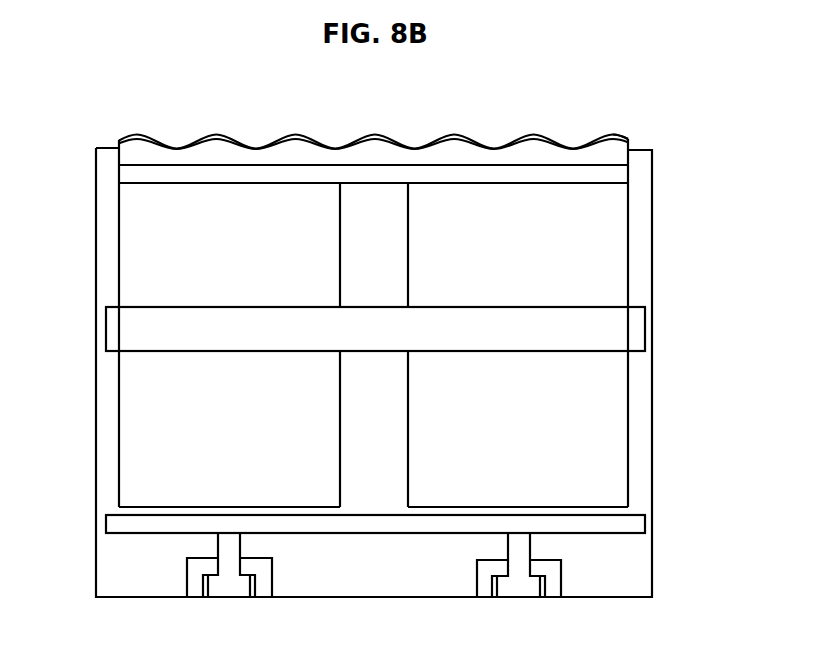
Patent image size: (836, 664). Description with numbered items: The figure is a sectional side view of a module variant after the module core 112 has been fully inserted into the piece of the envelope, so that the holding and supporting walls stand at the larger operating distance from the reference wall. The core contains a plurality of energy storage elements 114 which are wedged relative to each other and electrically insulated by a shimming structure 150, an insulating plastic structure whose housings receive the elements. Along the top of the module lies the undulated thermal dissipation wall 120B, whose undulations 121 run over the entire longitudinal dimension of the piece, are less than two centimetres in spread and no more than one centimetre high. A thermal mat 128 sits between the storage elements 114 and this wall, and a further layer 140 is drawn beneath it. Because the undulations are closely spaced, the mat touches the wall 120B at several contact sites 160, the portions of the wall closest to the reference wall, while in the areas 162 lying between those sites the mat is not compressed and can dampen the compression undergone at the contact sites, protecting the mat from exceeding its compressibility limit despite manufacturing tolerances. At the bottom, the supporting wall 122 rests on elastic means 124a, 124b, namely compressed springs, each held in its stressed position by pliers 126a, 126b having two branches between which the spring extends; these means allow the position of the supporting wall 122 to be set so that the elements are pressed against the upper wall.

The module core 112 is at (108, 253).
The energy storage element 114 is at (607, 256).
The thermal dissipation wall 120B is at (531, 136).
The undulations 121 is at (459, 122).
The supporting wall 122 is at (636, 524).
The elastic means 124a is at (521, 588).
The elastic means 124b is at (233, 588).
The pliers 126a is at (553, 586).
The pliers 126b is at (193, 586).
The thermal mat 128 is at (123, 153).
The intermediate layer 140 is at (123, 172).
The shimming structure 150 is at (628, 327).
The contact sites 160 is at (176, 147).
The areas 162 is at (251, 126).